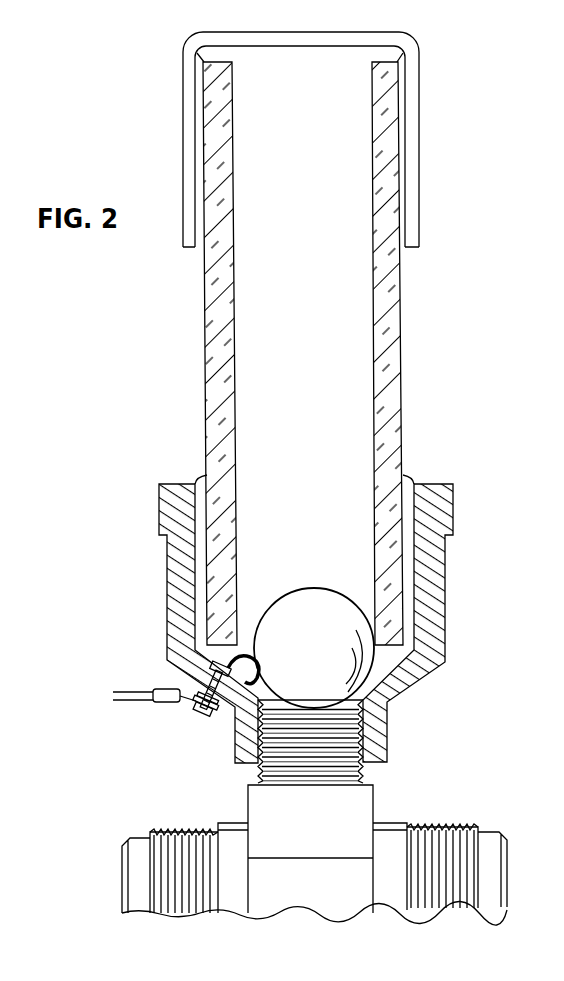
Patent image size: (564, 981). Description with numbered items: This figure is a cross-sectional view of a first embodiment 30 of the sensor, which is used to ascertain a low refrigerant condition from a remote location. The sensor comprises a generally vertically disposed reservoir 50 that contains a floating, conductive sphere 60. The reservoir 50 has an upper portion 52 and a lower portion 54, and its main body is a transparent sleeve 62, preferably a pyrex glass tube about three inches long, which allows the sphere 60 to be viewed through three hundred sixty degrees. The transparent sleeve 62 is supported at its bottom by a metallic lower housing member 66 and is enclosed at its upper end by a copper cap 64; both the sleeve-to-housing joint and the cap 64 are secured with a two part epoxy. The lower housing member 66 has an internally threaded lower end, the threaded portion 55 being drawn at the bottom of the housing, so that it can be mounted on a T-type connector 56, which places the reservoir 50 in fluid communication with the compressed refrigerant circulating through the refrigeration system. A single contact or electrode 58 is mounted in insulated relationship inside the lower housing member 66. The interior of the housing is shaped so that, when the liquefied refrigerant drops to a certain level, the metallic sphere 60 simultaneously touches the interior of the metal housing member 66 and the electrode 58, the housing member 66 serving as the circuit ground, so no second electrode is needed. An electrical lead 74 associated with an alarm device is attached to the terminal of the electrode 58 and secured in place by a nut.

The sensor embodiment 30 is at (440, 274).
The reservoir 50 is at (404, 437).
The upper portion 52 is at (433, 164).
The lower portion 54 is at (462, 518).
The threaded portion 55 is at (363, 730).
The T-type connector 56 is at (363, 817).
The electrode 58 is at (247, 652).
The conductive sphere 60 is at (321, 600).
The transparent sleeve 62 is at (402, 368).
The copper cap 64 is at (183, 139).
The lower housing member 66 is at (160, 498).
The electrical lead 74 is at (113, 693).